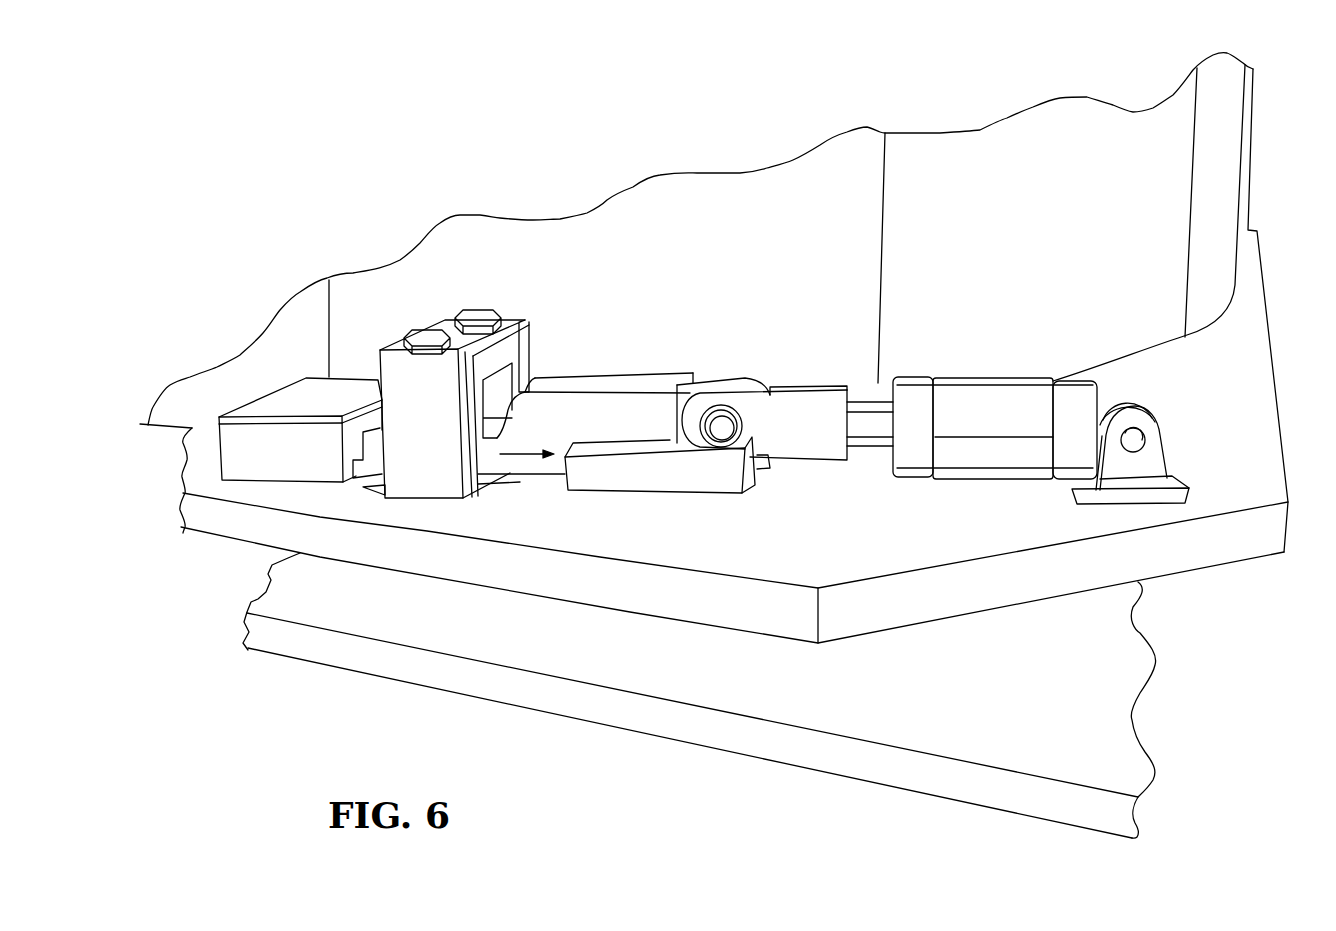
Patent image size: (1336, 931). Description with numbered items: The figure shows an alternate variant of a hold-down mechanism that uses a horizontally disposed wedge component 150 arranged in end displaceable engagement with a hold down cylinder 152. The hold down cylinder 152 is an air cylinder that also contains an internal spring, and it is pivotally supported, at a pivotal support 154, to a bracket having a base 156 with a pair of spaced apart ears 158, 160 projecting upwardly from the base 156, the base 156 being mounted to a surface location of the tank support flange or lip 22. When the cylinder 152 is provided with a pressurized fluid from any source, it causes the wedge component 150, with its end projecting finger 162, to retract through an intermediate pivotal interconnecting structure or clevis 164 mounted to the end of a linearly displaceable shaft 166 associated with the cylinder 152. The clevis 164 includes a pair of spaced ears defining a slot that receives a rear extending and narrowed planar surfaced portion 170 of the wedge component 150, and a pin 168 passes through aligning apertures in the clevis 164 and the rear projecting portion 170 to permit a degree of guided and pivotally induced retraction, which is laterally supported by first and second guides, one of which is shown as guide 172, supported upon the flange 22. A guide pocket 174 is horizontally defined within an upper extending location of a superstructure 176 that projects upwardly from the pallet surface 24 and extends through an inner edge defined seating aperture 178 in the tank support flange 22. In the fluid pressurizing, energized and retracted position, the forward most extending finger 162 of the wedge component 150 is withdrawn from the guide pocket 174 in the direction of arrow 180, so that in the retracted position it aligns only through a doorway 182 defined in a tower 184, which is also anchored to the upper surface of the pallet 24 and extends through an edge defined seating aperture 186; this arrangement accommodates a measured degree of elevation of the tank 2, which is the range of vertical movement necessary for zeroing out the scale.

The tank 2 is at (922, 150).
The tank support flange or lip 22 is at (874, 532).
The pallet surface 24 is at (924, 697).
The wedge component 150 is at (600, 403).
The hold down cylinder 152 is at (988, 453).
The pivotal support 154 is at (1133, 440).
The base 156 is at (1133, 498).
The ear 158 is at (1147, 468).
The ear 160 is at (1123, 400).
The end projecting finger 162 is at (372, 447).
The clevis 164 is at (803, 443).
The linearly displaceable shaft 166 is at (860, 410).
The pin 168 is at (718, 420).
The rear extending narrowed planar surfaced portion 170 is at (707, 380).
The guide 172 is at (662, 473).
The guide pocket 174 is at (379, 428).
The superstructure 176 is at (315, 420).
The seating aperture 178 is at (258, 479).
The arrow 180 is at (527, 455).
The doorway 182 is at (530, 376).
The tower 184 is at (420, 482).
The seating aperture 186 is at (370, 490).